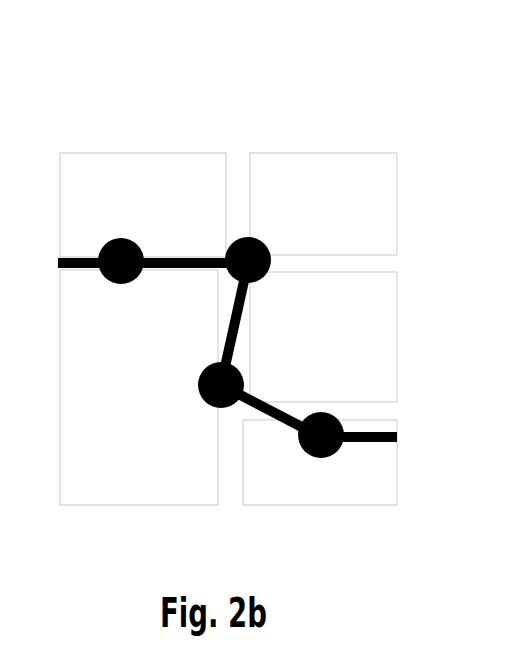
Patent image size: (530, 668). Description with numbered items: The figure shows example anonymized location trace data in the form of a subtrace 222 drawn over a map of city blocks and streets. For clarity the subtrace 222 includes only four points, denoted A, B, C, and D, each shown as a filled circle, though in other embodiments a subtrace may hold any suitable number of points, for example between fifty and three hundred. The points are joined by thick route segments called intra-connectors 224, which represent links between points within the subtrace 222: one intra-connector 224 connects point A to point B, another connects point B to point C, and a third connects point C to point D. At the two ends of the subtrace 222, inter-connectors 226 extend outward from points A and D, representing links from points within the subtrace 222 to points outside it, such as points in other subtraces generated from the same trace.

The subtrace 222 is at (410, 75).
The intra-connectors 224 is at (184, 223).
The inter-connectors 226 is at (51, 228).